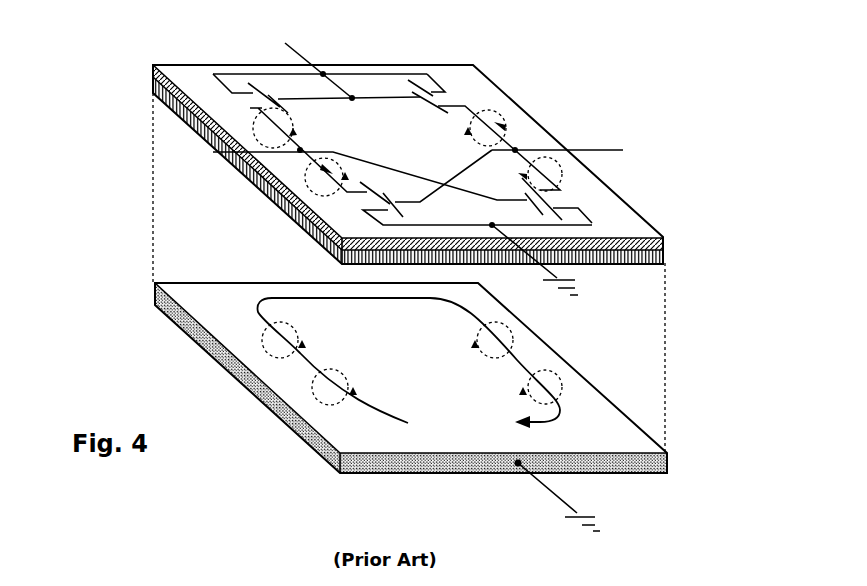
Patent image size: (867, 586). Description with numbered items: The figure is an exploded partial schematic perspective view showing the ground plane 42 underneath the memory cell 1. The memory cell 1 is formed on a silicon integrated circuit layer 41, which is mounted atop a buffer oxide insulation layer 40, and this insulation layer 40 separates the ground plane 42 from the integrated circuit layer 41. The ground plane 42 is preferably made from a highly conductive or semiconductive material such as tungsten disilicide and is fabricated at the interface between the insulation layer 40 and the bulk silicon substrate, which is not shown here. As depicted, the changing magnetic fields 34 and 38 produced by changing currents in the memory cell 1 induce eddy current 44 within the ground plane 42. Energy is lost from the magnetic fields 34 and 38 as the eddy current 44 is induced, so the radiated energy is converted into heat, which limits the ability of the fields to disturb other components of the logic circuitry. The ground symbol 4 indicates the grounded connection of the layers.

The memory cell 1 is at (181, 49).
The buffer oxide insulation layer 40 is at (153, 90).
The silicon integrated circuit layer 41 is at (153, 67).
The ground plane 42 is at (155, 305).
The eddy current 44 is at (395, 298).
The magnetic field 34 is at (262, 343).
The magnetic field 38 is at (491, 362).
The ground 4 is at (560, 277).